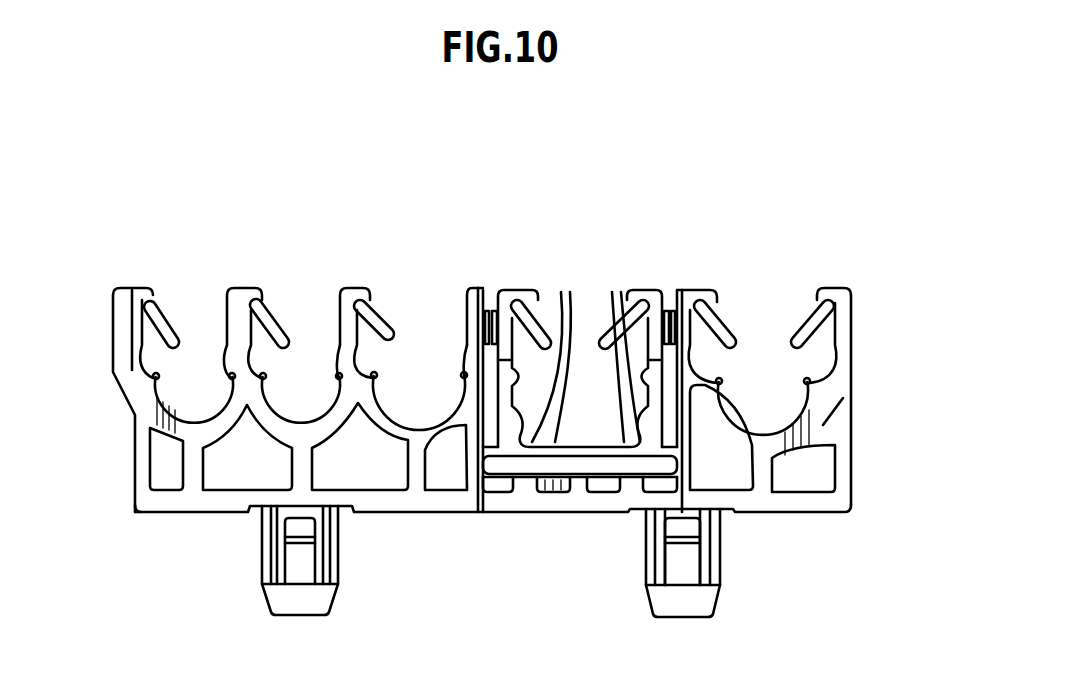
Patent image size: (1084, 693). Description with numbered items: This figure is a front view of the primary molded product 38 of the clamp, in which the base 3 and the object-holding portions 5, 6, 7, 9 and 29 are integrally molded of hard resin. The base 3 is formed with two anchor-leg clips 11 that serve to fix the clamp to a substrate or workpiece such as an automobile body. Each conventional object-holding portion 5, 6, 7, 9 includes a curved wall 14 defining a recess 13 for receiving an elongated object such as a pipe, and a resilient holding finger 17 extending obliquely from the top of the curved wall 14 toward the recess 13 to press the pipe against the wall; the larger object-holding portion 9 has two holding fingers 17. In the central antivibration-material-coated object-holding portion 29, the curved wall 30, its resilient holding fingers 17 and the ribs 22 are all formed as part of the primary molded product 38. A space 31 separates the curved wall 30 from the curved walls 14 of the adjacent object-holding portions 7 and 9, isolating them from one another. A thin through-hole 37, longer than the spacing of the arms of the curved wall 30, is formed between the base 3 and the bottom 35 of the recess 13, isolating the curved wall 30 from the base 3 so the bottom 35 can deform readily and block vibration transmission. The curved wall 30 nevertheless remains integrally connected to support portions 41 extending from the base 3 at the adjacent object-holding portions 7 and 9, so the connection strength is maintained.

The base 3 is at (523, 511).
The object-holding portion 5 is at (199, 326).
The object-holding portion 6 is at (309, 326).
The object-holding portion 7 is at (425, 326).
The object-holding portion 9 is at (766, 316).
The anchor-leg clip 11 is at (262, 576).
The recess 13 is at (182, 400).
The curved wall 14 is at (470, 290).
The resilient holding finger 17 is at (163, 290).
The rib 22 is at (567, 300).
The antivibration-material-coated object-holding portion 29 is at (583, 313).
The curved wall 30 is at (497, 310).
The space 31 is at (668, 315).
The bottom 35 is at (593, 485).
The through-hole 37 is at (572, 470).
The primary molded product 38 is at (864, 351).
The support portion 41 is at (466, 435).